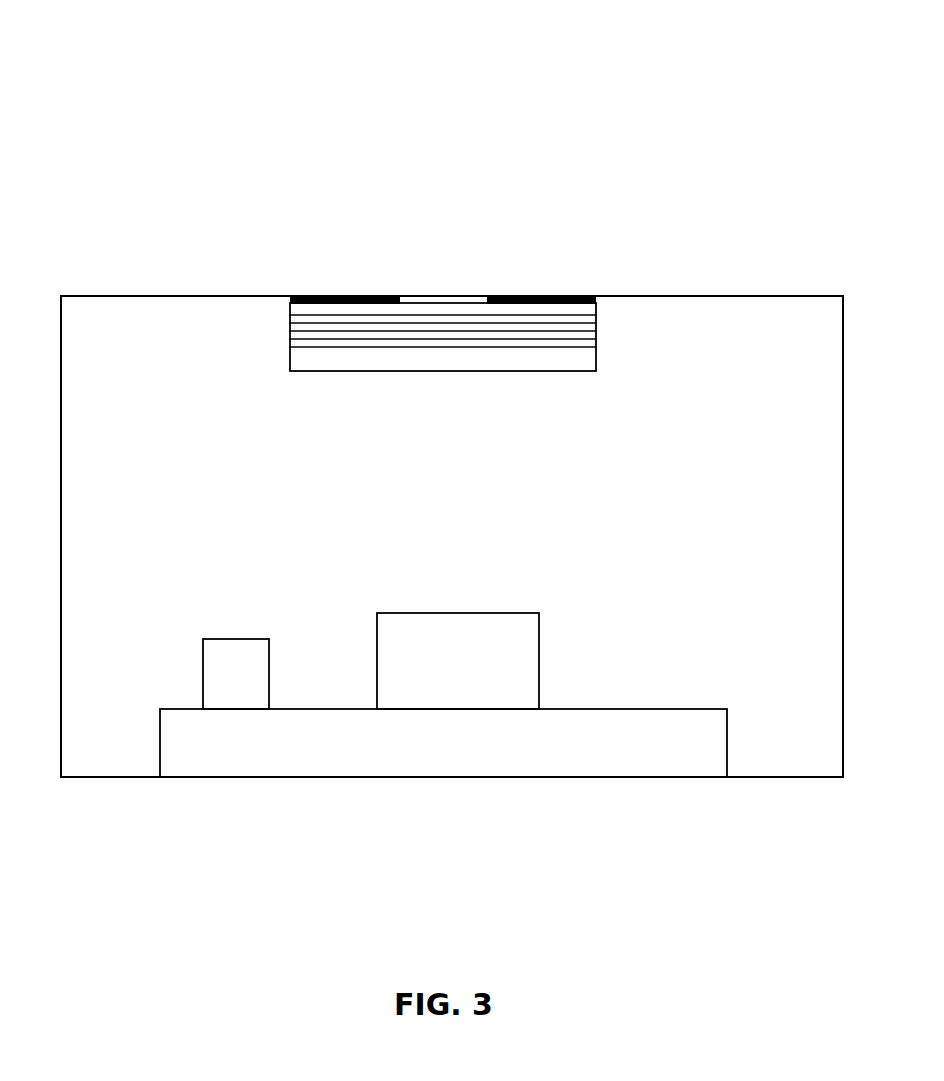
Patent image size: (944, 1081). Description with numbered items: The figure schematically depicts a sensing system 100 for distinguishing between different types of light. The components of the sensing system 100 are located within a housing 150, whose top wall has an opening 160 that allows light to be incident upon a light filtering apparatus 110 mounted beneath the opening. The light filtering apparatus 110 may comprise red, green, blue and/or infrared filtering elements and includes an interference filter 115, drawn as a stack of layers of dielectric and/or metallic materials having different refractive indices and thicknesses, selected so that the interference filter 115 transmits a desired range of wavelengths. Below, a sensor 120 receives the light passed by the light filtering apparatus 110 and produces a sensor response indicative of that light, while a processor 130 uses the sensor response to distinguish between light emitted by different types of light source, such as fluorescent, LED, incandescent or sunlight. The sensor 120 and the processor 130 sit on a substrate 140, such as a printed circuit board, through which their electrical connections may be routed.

The sensing system 100 is at (106, 128).
The light filtering apparatus 110 is at (596, 370).
The interference filter 115 is at (596, 332).
The sensor 120 is at (539, 642).
The processor 130 is at (217, 645).
The substrate 140 is at (683, 709).
The housing 150 is at (738, 297).
The opening 160 is at (445, 297).